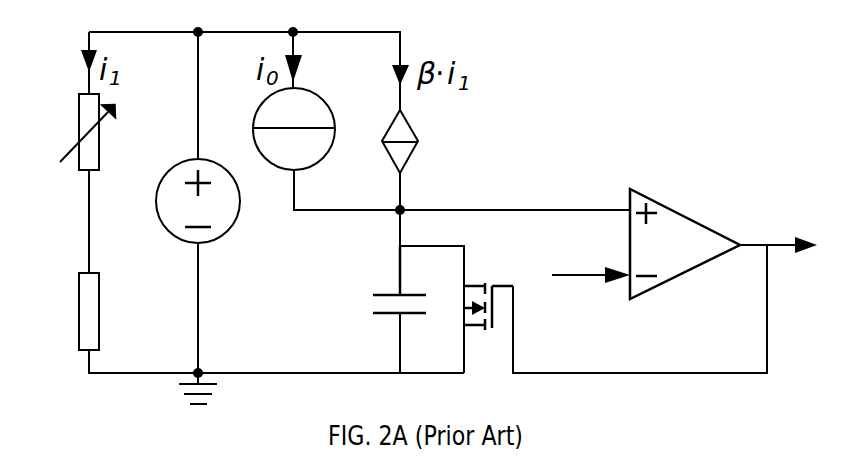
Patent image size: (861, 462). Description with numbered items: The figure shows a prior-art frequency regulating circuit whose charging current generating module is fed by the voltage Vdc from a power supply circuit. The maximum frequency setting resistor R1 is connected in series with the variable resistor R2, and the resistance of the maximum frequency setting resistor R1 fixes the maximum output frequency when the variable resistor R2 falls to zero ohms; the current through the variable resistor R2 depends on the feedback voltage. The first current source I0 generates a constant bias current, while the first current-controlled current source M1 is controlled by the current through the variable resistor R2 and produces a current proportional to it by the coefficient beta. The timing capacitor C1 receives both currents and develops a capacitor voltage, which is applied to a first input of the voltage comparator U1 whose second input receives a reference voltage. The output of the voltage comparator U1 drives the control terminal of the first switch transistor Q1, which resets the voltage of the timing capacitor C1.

The maximum frequency setting resistor R1 is at (58, 311).
The variable resistor R2 is at (105, 132).
The voltage Vdc is at (193, 223).
The first current source I0 is at (300, 115).
The first current-controlled current source M1 is at (439, 141).
The timing capacitor C1 is at (377, 287).
The first switch transistor Q1 is at (490, 283).
The voltage comparator U1 is at (646, 231).